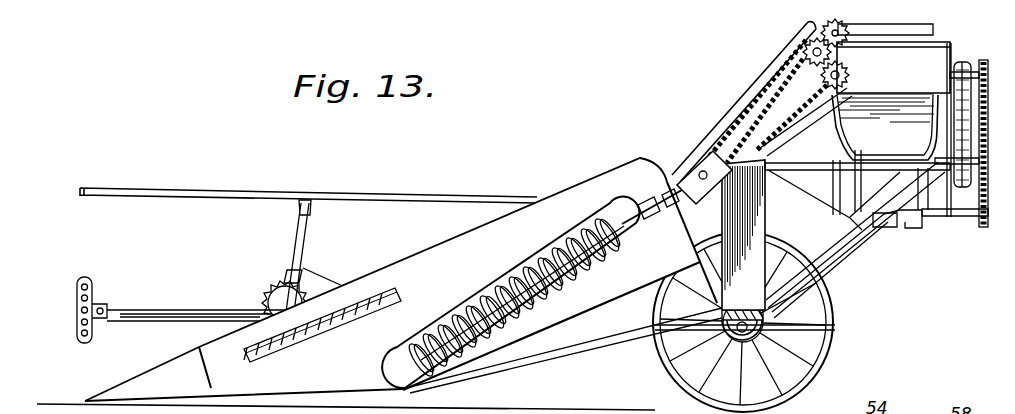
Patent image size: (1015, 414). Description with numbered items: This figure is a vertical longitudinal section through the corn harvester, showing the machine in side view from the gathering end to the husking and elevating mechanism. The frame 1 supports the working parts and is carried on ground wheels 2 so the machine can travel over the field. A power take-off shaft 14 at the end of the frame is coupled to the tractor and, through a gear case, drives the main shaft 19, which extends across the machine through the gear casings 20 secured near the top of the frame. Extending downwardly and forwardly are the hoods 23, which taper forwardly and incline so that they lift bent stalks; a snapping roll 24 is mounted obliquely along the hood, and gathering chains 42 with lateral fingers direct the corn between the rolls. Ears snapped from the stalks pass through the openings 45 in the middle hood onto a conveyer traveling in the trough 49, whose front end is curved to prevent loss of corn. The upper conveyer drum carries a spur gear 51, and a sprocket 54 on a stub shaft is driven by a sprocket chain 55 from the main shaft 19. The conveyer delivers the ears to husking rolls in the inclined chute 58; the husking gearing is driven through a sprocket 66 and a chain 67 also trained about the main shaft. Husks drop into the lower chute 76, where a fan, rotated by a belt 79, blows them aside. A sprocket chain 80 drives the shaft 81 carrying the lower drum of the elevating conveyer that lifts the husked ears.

The frame 1 is at (765, 218).
The ground wheels 2 is at (831, 341).
The power take-off shaft 14 is at (234, 191).
The main shaft 19 is at (699, 170).
The gear casings 20 is at (681, 222).
The hoods 23 is at (421, 262).
The snapping roll 24 is at (453, 347).
The chains 42 is at (330, 336).
The openings 45 is at (474, 300).
The trough 49 is at (497, 360).
The spur gear 51 is at (885, 44).
The sprocket 54 is at (806, 51).
The sprocket chain 55 is at (748, 103).
The chute 58 is at (922, 76).
The sprocket 66 is at (885, 127).
The chain 67 is at (800, 124).
The lower chute 76 is at (920, 195).
The belt 79 is at (962, 135).
The sprocket chain 80 is at (990, 220).
The shaft 81 is at (962, 218).